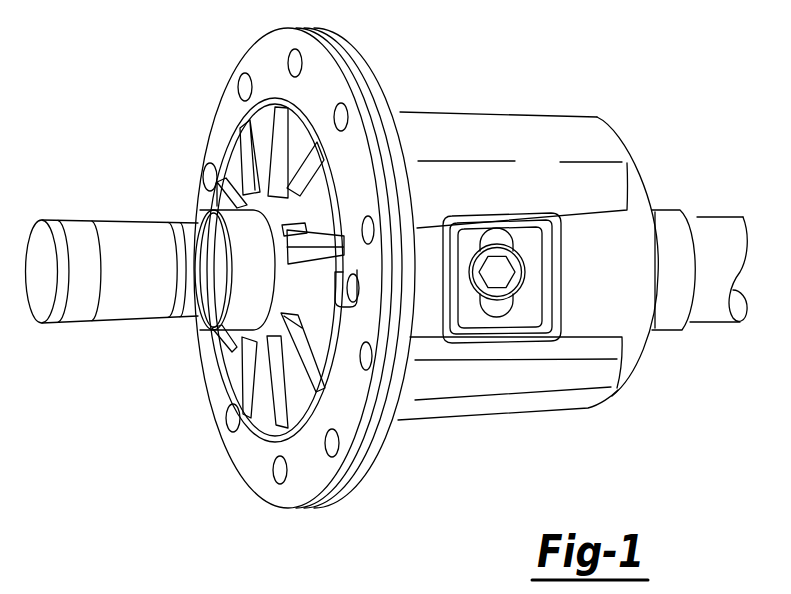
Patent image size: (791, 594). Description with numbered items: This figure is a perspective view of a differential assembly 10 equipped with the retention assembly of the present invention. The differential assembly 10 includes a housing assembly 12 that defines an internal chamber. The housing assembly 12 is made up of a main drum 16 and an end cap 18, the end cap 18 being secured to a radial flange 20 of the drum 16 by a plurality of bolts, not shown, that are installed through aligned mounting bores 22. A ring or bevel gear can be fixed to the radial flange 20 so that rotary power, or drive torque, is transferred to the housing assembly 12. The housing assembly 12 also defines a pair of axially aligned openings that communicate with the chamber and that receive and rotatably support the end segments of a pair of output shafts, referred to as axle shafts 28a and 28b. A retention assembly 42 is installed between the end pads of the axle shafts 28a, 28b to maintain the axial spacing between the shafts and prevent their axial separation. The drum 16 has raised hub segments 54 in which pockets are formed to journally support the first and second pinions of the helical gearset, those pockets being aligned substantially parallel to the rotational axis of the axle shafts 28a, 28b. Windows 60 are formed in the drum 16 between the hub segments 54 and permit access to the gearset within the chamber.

The differential assembly 10 is at (562, 80).
The housing assembly 12 is at (572, 103).
The main drum 16 is at (640, 350).
The end cap 18 is at (227, 330).
The radial flange 20 is at (370, 84).
The mounting bores 22 is at (243, 85).
The axle shaft 28a is at (730, 227).
The axle shaft 28b is at (123, 230).
The retention assembly 42 is at (511, 240).
The raised hub segments 54 is at (596, 132).
The windows 60 is at (468, 341).